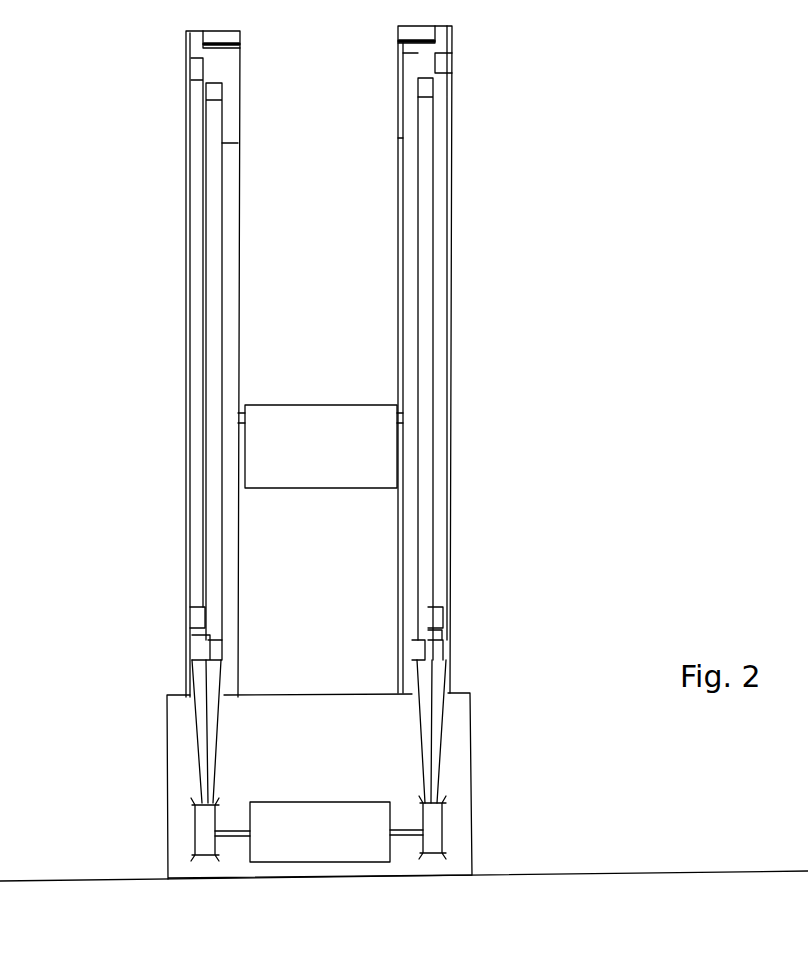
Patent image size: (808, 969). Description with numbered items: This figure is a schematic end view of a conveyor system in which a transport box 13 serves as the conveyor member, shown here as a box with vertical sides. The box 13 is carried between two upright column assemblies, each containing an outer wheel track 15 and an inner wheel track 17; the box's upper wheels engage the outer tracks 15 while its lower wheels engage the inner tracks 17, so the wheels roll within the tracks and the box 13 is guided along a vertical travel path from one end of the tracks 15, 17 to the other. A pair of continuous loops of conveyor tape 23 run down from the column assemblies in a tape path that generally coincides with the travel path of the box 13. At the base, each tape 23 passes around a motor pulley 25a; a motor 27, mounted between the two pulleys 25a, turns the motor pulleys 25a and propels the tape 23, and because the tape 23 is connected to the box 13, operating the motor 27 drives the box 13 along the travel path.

The transport box 13 is at (312, 502).
The outer wheel tracks 15 is at (211, 351).
The inner wheel tracks 17 is at (192, 444).
The conveyor tape 23 is at (200, 750).
The motor pulley 25a is at (186, 838).
The motor 27 is at (305, 822).